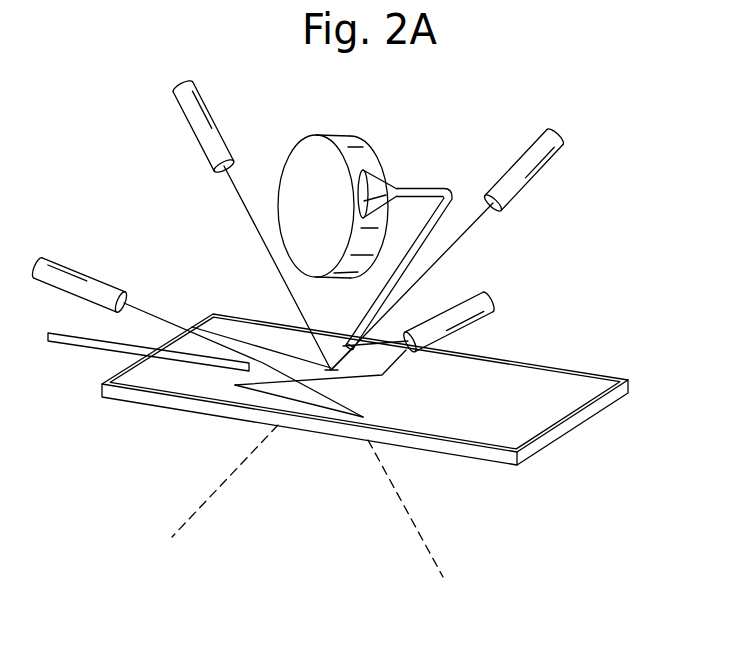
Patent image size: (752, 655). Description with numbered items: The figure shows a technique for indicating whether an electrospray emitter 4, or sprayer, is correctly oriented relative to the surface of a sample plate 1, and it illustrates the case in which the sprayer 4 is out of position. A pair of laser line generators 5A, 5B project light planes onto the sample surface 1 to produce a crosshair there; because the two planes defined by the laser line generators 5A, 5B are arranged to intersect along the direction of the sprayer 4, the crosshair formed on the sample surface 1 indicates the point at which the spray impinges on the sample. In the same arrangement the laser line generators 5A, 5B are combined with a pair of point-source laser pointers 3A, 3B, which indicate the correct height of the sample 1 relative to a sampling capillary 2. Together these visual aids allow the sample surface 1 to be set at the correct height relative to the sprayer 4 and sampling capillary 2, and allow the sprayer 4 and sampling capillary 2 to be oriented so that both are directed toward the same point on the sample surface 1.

The sample plate 1 is at (576, 382).
The sampling capillary 2 is at (413, 262).
The point-source laser 3A is at (187, 128).
The point-source laser 3B is at (540, 173).
The electrospray emitter 4 is at (67, 347).
The laser line generator 5A is at (73, 263).
The laser line generator 5B is at (480, 312).